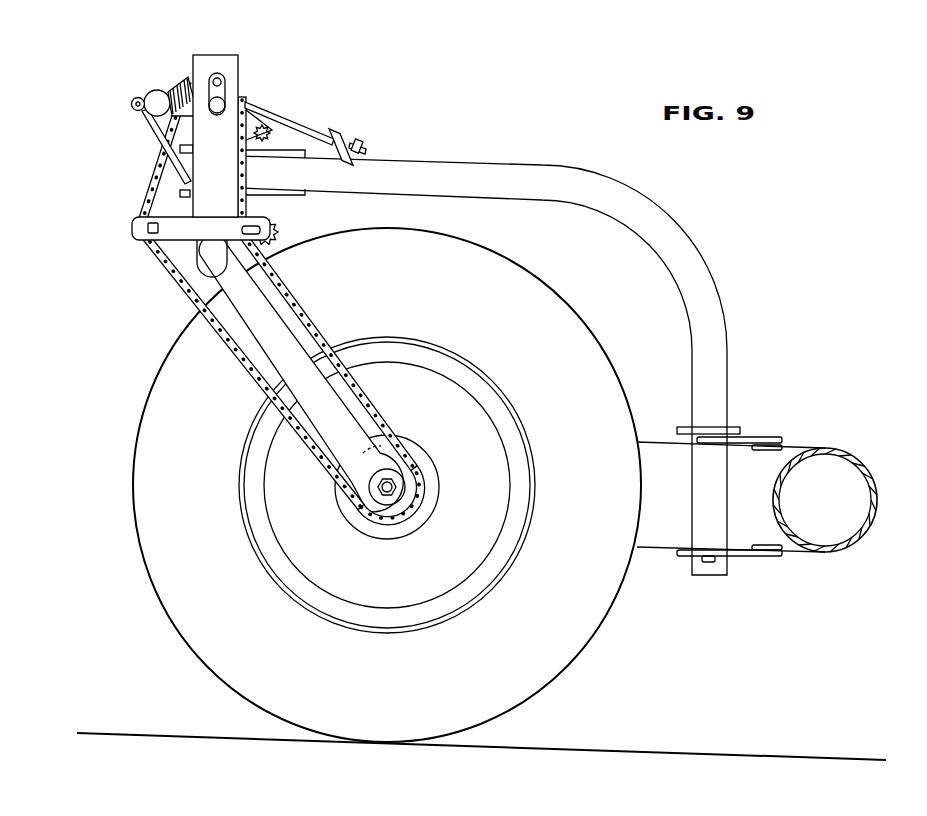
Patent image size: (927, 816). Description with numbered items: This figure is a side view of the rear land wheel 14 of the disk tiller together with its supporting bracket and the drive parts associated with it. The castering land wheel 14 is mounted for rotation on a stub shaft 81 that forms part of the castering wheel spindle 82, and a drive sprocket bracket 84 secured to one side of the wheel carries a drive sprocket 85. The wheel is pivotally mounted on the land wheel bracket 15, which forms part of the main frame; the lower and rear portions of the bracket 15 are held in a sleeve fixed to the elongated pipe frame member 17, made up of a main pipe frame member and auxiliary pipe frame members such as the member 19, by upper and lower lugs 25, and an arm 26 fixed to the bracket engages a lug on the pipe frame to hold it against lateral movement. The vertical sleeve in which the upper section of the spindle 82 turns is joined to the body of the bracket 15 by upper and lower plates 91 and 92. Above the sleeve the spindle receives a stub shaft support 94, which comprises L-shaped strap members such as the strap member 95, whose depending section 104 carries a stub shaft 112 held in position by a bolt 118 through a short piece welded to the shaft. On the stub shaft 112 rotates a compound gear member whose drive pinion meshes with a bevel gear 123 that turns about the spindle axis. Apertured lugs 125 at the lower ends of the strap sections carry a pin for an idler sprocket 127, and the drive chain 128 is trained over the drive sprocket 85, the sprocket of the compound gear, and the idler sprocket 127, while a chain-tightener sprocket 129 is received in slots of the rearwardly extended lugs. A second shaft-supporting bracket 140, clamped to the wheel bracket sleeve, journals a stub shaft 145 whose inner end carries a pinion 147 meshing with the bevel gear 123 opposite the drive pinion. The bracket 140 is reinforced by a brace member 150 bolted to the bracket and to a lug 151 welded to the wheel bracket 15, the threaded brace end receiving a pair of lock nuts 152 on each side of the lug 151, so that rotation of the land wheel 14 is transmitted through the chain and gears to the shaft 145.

The rear castering land wheel 14 is at (594, 645).
The land wheel bracket 15 is at (505, 166).
The elongated pipe frame member 17 is at (852, 446).
The auxiliary pipe frame member 19 is at (877, 502).
The upper and lower lugs 25 is at (748, 444).
The arm 26 is at (741, 433).
The stub shaft 81 is at (383, 490).
The castering wheel spindle 82 is at (294, 329).
The drive sprocket bracket 84 is at (422, 460).
The drive sprocket 85 is at (414, 505).
The upper plate 91 is at (290, 152).
The lower plate 92 is at (301, 196).
The stub shaft support 94 is at (134, 116).
The L-shaped strap member 95 is at (192, 112).
The depending section 104 is at (200, 163).
The stub shaft 112 is at (225, 103).
The bolt 118 is at (219, 79).
The bevel gear 123 is at (270, 131).
The apertured lug 125 is at (176, 246).
The idler sprocket 127 is at (185, 231).
The drive chain 128 is at (227, 354).
The chain-tightener sprocket 129 is at (266, 241).
The second shaft-supporting bracket 140 is at (136, 116).
The stub shaft 145 is at (141, 96).
The pinion 147 is at (179, 55).
The brace member 150 is at (312, 127).
The lug 151 is at (340, 157).
The lock nuts 152 is at (345, 138).